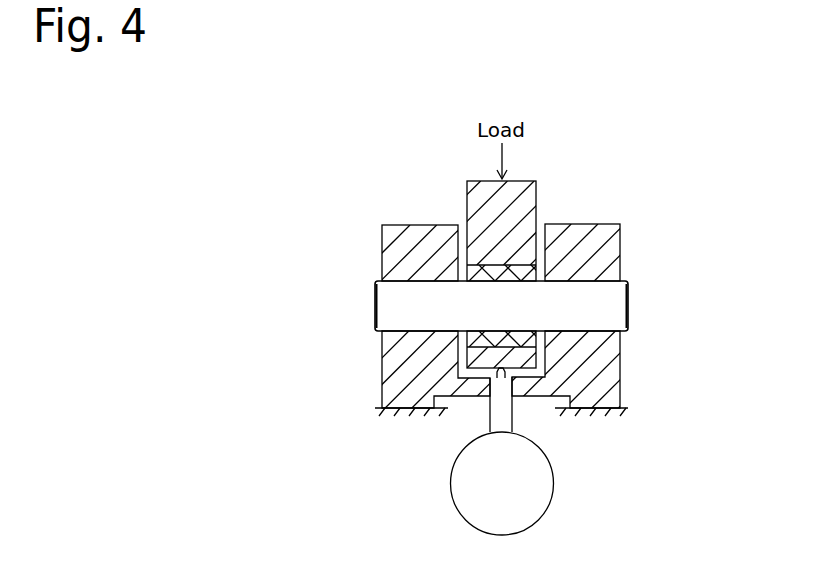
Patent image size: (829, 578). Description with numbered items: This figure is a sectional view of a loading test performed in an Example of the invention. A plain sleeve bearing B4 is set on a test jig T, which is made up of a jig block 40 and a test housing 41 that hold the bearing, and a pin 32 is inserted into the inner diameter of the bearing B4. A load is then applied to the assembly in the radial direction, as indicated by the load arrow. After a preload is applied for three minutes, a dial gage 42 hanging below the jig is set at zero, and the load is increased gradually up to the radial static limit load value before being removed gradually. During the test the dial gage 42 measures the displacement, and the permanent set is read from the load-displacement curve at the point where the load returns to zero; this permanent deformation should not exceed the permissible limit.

The jig block 40 is at (605, 246).
The test housing 41 is at (522, 203).
The bearing of Example and Comparative Example B4 is at (513, 268).
The pin 32 is at (610, 298).
The dial gage 42 is at (540, 489).
The test jig T is at (649, 328).